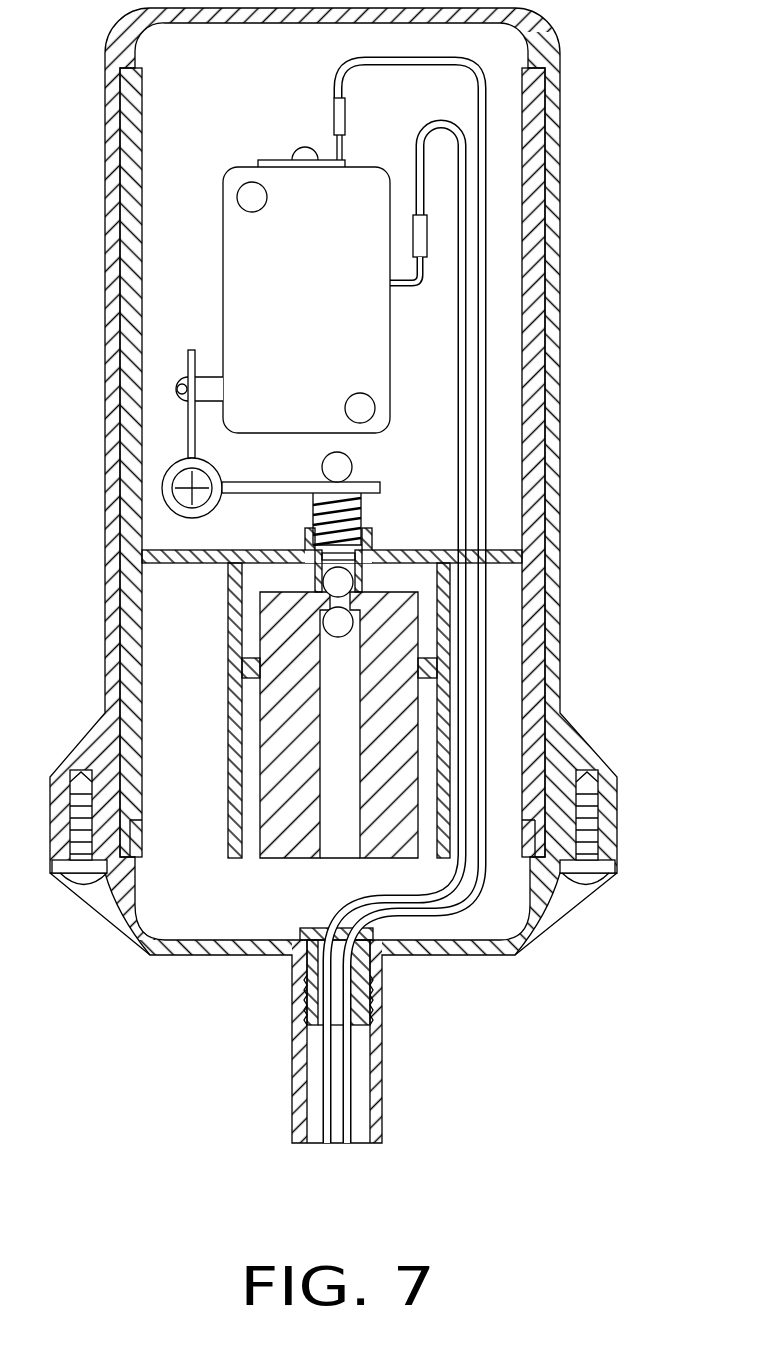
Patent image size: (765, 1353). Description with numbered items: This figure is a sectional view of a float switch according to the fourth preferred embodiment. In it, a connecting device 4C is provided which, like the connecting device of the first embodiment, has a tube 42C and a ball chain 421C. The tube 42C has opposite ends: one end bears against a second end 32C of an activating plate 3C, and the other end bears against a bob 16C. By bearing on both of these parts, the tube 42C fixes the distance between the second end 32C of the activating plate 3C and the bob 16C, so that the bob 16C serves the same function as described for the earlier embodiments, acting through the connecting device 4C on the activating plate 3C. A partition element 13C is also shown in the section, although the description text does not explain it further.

The activating plate 3C is at (165, 450).
The connecting device 4C is at (378, 504).
The second end 32C is at (353, 484).
The tube 42C is at (363, 518).
The ball chain 421C is at (345, 583).
The partition plate 13C is at (195, 565).
The bob 16C is at (277, 858).